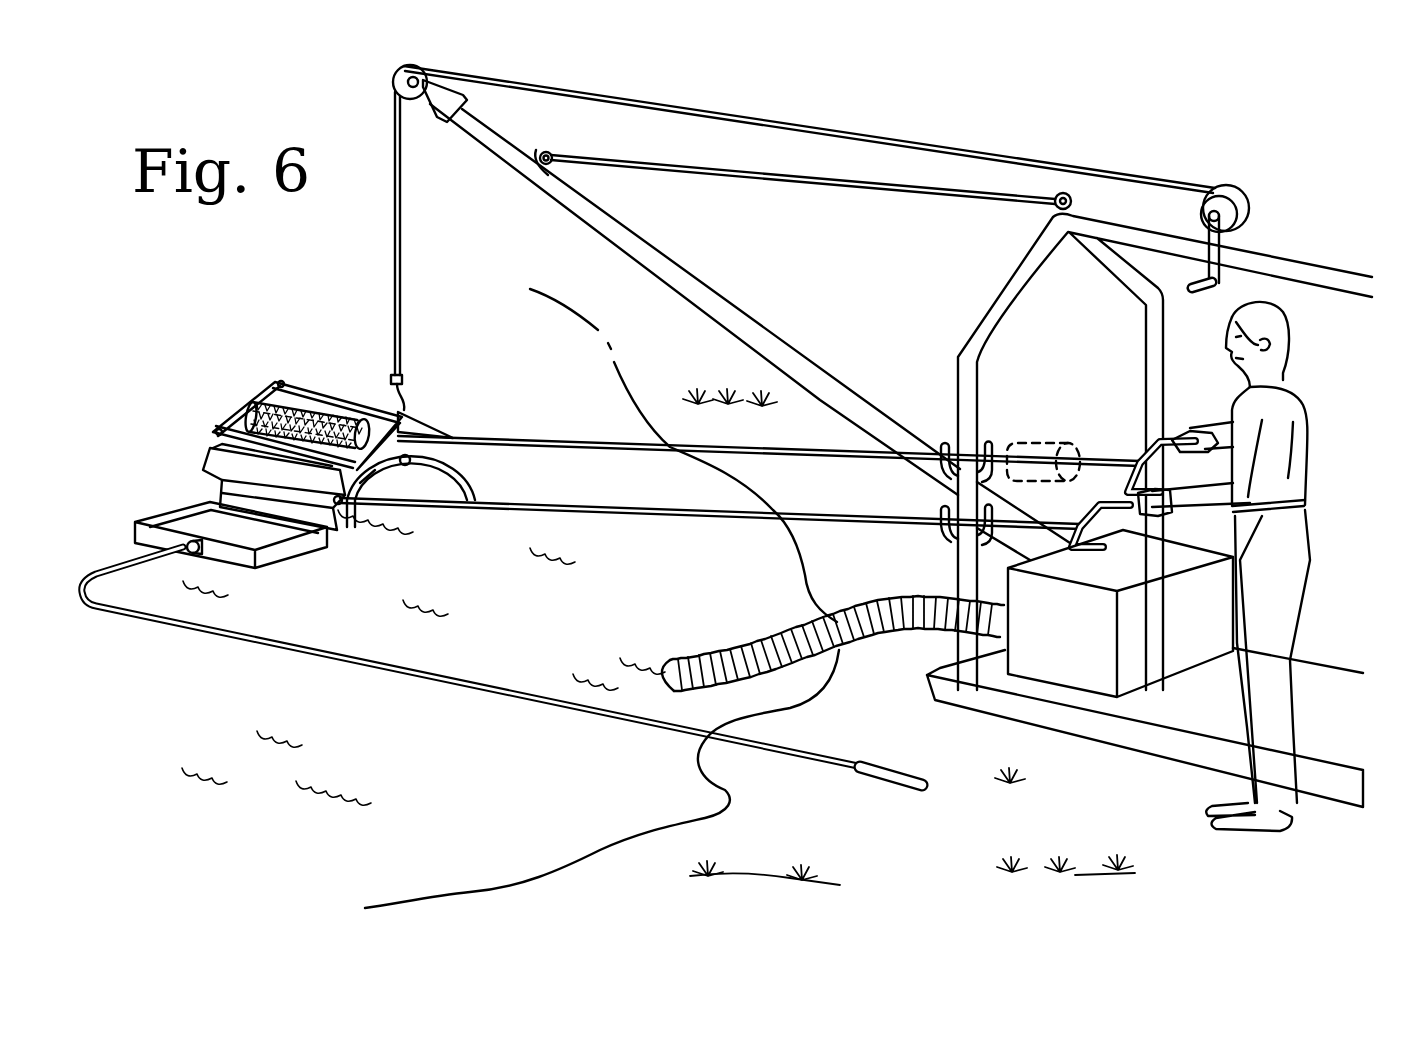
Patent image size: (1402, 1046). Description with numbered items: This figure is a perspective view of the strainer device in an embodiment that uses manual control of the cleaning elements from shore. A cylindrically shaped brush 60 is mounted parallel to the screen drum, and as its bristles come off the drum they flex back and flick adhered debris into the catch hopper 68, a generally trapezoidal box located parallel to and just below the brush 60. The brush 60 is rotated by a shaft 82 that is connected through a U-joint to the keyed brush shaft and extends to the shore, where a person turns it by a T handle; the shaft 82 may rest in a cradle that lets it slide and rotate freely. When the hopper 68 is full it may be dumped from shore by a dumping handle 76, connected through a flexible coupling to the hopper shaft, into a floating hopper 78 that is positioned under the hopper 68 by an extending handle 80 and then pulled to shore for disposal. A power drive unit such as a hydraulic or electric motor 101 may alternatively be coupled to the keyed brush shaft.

The brush 60 is at (320, 400).
The catch hopper 68 is at (218, 465).
The floating hopper 78 is at (277, 553).
The extending handle 80 is at (507, 702).
The shaft 82 is at (543, 440).
The dumping handle 76 is at (663, 511).
The motor 101 is at (1040, 440).